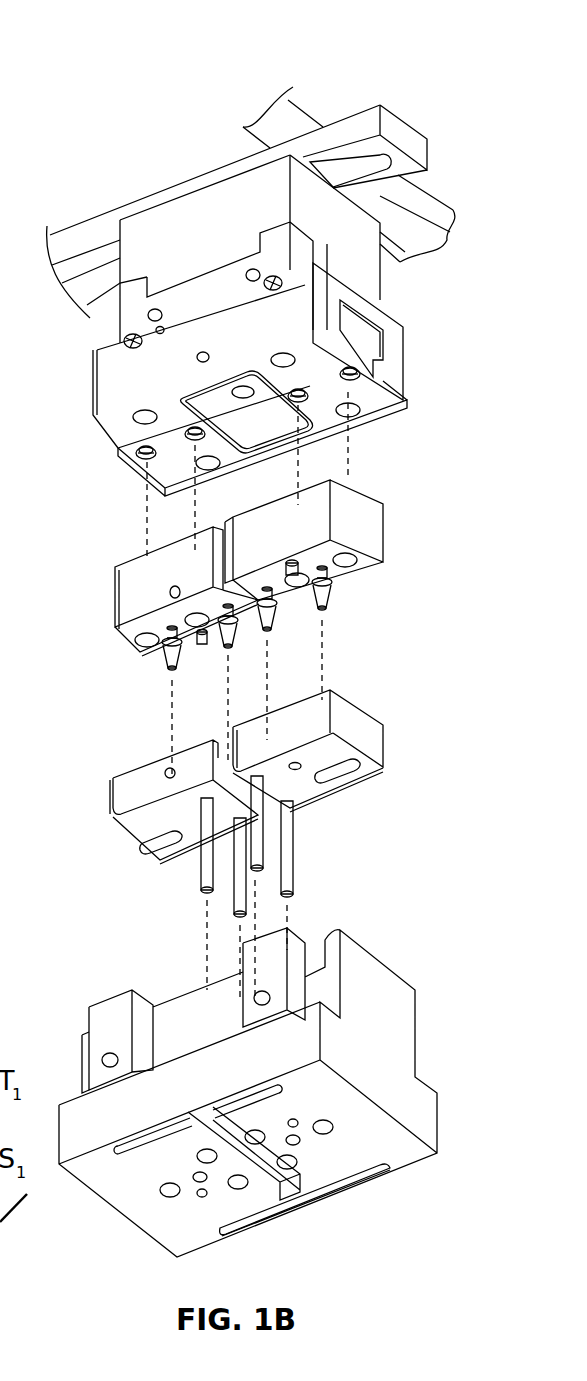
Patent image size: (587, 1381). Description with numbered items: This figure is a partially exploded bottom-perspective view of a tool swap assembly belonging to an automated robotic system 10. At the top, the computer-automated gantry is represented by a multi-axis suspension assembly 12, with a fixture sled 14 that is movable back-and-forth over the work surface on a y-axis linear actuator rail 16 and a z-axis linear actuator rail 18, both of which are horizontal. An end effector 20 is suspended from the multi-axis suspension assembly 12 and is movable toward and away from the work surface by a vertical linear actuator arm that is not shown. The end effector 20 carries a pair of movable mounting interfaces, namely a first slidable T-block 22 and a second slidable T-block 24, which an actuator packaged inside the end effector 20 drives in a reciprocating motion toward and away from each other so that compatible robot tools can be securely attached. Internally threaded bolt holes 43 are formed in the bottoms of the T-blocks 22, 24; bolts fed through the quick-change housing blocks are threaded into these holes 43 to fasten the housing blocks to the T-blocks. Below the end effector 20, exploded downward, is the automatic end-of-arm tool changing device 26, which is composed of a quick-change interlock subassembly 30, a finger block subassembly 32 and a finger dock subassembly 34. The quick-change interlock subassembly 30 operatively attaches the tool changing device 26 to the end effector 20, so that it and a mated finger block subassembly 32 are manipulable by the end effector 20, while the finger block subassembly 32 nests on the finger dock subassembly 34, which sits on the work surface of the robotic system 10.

The automated robotic system 10 is at (143, 78).
The multi-axis suspension assembly 12 is at (110, 137).
The fixture sled 14 is at (170, 220).
The y-axis linear actuator rail 16 is at (400, 130).
The z-axis linear actuator rail 18 is at (307, 113).
The end effector 20 is at (83, 408).
The first slidable T-block 22 is at (150, 470).
The second slidable T-block 24 is at (405, 403).
The automatic end-of-arm tool changing device 26 is at (420, 392).
The quick-change interlock subassembly 30 is at (100, 612).
The finger block subassembly 32 is at (96, 833).
The finger dock subassembly 34 is at (70, 1020).
The internally threaded bolt hole 43 is at (352, 382).